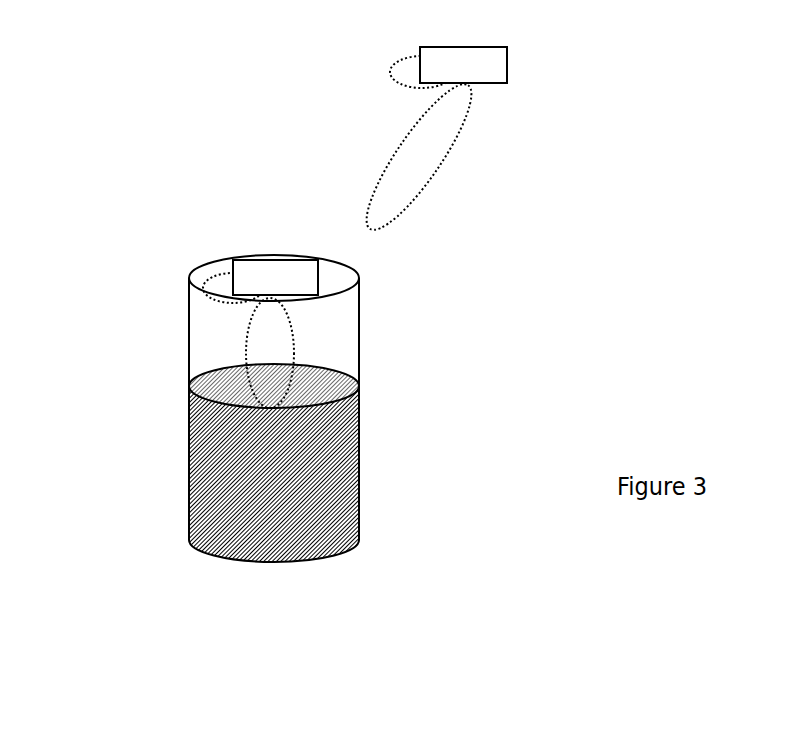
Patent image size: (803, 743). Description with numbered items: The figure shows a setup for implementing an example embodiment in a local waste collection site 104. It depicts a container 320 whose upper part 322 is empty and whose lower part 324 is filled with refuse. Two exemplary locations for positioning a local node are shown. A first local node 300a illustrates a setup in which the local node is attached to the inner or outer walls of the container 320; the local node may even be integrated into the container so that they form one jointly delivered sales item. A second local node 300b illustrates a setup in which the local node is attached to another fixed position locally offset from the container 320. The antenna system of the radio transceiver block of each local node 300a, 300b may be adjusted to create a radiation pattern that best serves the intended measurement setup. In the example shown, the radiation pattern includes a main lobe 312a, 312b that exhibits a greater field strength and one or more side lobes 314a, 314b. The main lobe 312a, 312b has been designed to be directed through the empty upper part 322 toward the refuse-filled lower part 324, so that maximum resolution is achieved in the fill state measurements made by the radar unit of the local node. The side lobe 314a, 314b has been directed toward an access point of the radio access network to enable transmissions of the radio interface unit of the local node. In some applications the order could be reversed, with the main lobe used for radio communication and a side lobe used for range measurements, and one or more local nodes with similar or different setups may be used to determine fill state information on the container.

The local waste collection site 104 is at (607, 370).
The first local node 300a is at (263, 260).
The second local node 300b is at (507, 60).
The main lobe 312a is at (292, 340).
The main lobe 312b is at (462, 127).
The side lobe 314a is at (208, 300).
The side lobe 314b is at (390, 73).
The container 320 is at (358, 371).
The upper part of the container 322 is at (203, 355).
The lower part of the container 324 is at (190, 492).